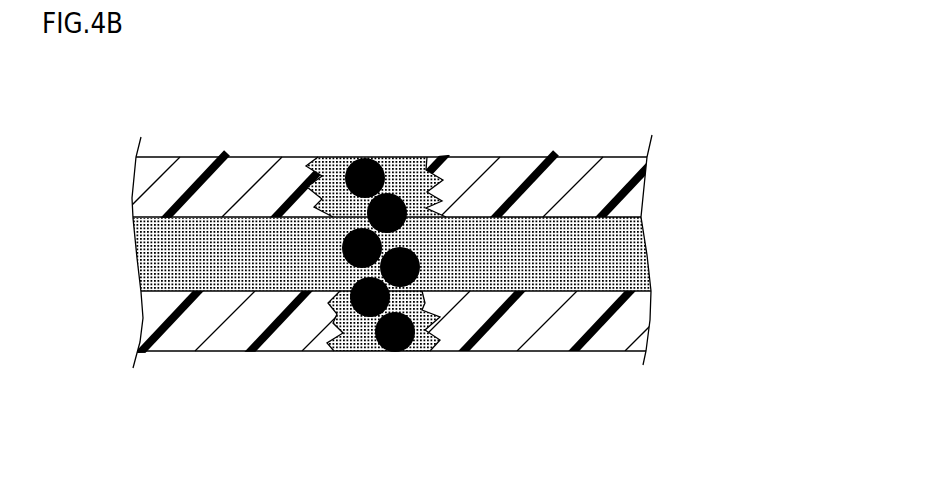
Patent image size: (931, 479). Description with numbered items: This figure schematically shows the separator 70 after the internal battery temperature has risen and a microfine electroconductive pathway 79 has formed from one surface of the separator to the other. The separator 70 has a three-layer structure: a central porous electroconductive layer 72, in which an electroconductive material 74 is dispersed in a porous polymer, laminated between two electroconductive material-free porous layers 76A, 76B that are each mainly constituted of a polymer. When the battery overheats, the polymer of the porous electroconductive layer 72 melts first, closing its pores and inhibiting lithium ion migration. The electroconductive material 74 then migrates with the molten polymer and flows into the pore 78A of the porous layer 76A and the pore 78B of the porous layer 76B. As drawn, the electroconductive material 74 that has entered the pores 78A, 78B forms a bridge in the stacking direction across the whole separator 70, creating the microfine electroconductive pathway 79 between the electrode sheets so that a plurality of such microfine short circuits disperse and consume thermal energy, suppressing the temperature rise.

The separator 70 is at (630, 95).
The porous electroconductive layer 72 is at (651, 257).
The electroconductive material 74 is at (418, 340).
The electroconductive material-free porous layer 76A is at (648, 182).
The electroconductive material-free porous layer 76B is at (656, 327).
The pore 78A is at (337, 188).
The pore 78B is at (350, 343).
The microfine electroconductive pathway 79 is at (397, 188).